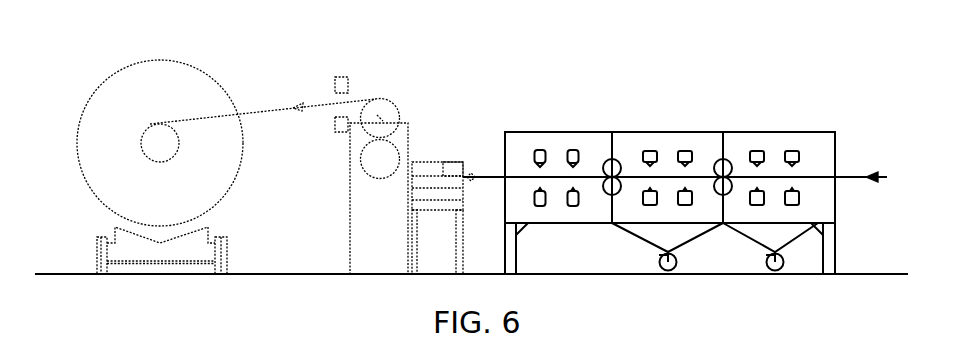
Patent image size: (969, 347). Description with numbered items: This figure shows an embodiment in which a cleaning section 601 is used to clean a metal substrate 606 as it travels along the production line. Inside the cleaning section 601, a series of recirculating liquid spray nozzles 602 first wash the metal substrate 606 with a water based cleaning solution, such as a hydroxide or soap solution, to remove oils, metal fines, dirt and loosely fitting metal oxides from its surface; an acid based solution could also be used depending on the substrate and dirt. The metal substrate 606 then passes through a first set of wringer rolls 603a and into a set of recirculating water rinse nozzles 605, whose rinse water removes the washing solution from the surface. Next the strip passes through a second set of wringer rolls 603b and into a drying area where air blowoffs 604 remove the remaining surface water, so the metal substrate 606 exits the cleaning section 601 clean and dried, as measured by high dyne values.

The cleaning section 601 is at (833, 78).
The recirculating liquid spray nozzles 602 is at (780, 158).
The first set of wringer rolls 603a is at (732, 158).
The second set of wringer rolls 603b is at (623, 158).
The air blowoffs 604 is at (557, 155).
The recirculating water rinse nozzles 605 is at (668, 152).
The metal substrate 606 is at (850, 179).